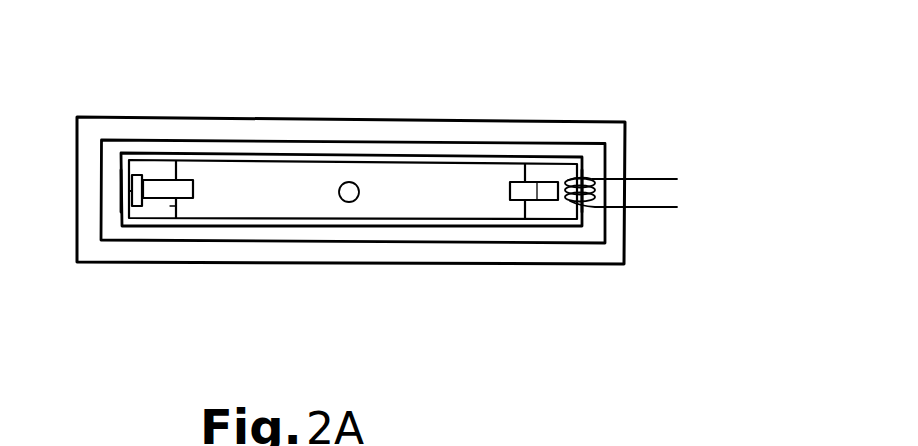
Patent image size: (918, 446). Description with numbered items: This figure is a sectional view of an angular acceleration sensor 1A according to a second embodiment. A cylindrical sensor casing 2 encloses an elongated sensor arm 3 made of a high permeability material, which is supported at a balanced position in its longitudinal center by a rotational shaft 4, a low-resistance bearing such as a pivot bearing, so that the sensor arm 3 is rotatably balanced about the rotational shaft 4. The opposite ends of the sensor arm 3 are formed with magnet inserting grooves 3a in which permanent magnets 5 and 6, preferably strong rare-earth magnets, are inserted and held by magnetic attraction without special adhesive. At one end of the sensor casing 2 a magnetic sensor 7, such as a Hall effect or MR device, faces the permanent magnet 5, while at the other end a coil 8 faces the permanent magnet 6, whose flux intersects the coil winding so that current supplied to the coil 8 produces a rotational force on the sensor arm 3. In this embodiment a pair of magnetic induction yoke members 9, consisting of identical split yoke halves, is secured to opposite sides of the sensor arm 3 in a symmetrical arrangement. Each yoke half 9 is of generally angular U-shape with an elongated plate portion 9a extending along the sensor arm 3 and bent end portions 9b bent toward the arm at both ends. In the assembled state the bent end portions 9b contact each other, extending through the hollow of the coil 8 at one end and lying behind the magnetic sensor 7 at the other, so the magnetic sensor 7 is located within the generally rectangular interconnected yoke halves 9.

The angular acceleration sensor 1A is at (647, 91).
The sensor casing 2 is at (451, 126).
The sensor arm 3 is at (288, 182).
The magnet inserting groove 3a is at (185, 180).
The rotational shaft 4 is at (352, 202).
The permanent magnet 5 is at (174, 220).
The permanent magnet 6 is at (537, 185).
The magnetic sensor 7 is at (137, 208).
The coil 8 is at (572, 205).
The magnetic induction yoke member 9 is at (351, 190).
The elongated plate portion 9a is at (368, 160).
The bent end portion 9b is at (123, 175).